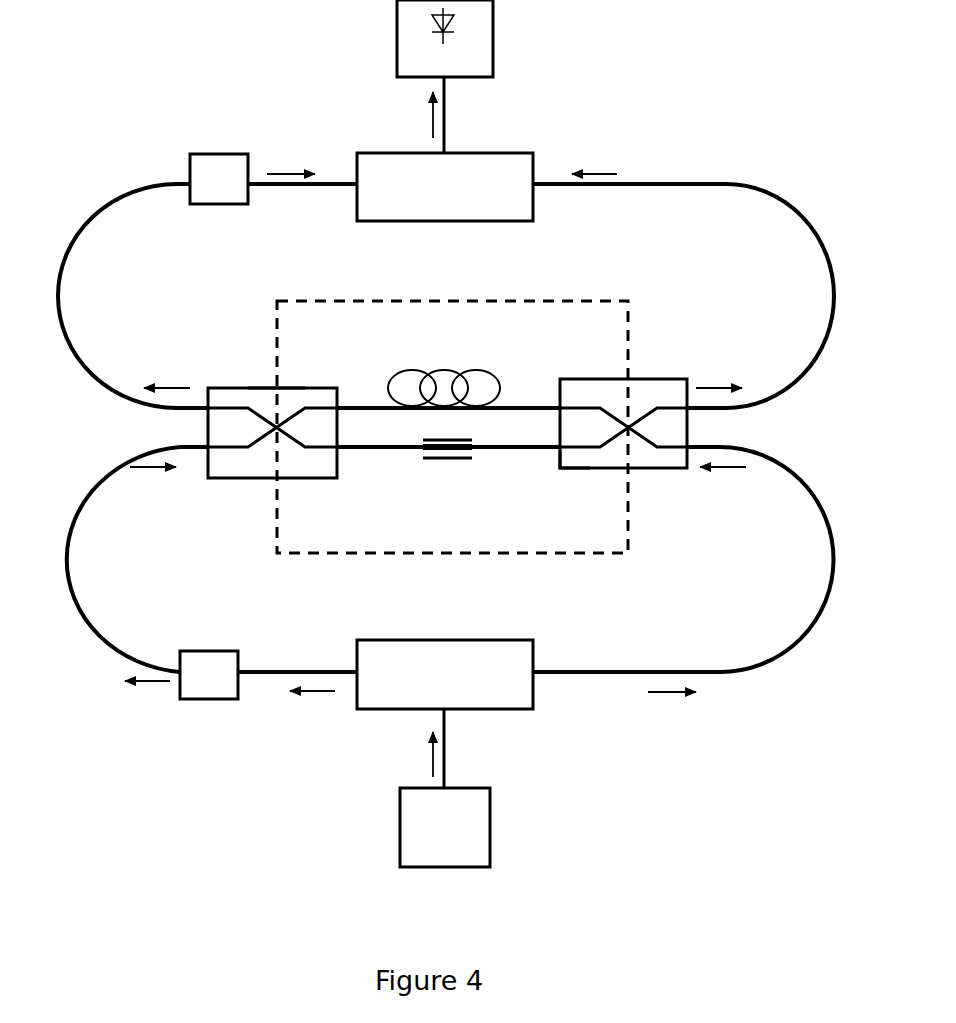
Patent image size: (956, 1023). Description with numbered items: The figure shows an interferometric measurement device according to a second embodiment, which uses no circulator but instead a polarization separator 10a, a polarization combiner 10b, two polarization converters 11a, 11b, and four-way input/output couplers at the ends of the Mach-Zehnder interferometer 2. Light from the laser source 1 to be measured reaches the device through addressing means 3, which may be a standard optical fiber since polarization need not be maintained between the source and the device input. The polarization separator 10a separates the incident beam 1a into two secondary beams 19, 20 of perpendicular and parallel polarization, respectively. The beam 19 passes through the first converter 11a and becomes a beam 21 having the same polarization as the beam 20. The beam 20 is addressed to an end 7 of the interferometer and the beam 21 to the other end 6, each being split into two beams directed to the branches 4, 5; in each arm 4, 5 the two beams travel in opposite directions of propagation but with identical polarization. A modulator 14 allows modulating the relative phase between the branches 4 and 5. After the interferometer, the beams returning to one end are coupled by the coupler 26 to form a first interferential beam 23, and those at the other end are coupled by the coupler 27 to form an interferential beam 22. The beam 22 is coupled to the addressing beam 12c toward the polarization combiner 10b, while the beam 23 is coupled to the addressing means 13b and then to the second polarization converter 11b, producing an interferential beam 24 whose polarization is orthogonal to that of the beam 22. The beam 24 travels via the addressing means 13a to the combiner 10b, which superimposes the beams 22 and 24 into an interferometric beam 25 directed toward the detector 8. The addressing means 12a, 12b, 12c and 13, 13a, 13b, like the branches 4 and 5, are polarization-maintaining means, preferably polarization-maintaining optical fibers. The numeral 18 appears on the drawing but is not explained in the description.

The source 1 is at (400, 825).
The incident beam 1a is at (430, 752).
The Mach-Zehnder interferometer 2 is at (525, 553).
The addressing means 3 is at (446, 725).
The branch (arm) of the interferometer 4 is at (450, 375).
The branch (arm) of the interferometer 5 is at (404, 448).
The end of the interferometer 6 is at (277, 427).
The end of the interferometer 7 is at (628, 427).
The detector 8 is at (493, 28).
The polarization separator 10a is at (533, 690).
The polarization combiner 10b is at (500, 221).
The first polarization converter 11a is at (210, 699).
The second polarization converter 11b is at (190, 163).
The addressing means 12a is at (302, 670).
The addressing means 12b is at (58, 553).
The addressing beam (addressing means) 12c is at (812, 235).
The addressing means 13 is at (812, 618).
The addressing means 13a is at (330, 188).
The addressing means 13b is at (60, 262).
The modulator 14 is at (432, 461).
The output fibre 18 is at (444, 118).
The secondary beam 19 is at (320, 691).
The secondary beam 20 is at (720, 470).
The beam 21 is at (140, 467).
The interferential beam 22 is at (585, 172).
The interferential beam 23 is at (160, 383).
The interferential beam 24 is at (295, 170).
The interferometric beam 25 is at (425, 108).
The coupler 26 is at (270, 388).
The coupler 27 is at (568, 468).